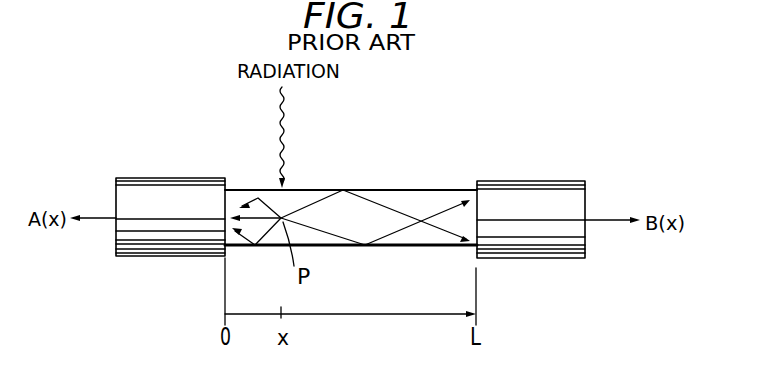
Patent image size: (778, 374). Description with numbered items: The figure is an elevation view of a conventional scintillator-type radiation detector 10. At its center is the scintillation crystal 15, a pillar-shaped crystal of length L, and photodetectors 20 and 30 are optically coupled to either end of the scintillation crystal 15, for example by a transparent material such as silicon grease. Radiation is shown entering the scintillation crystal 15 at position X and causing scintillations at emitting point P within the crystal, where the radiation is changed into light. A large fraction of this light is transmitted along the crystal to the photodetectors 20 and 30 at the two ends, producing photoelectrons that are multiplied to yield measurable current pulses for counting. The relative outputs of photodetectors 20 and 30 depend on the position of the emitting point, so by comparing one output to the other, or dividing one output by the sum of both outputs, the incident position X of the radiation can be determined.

The radiation detector 10 is at (143, 67).
The scintillation crystal 15 is at (400, 195).
The photodetector 20 is at (157, 190).
The photodetector 30 is at (538, 195).